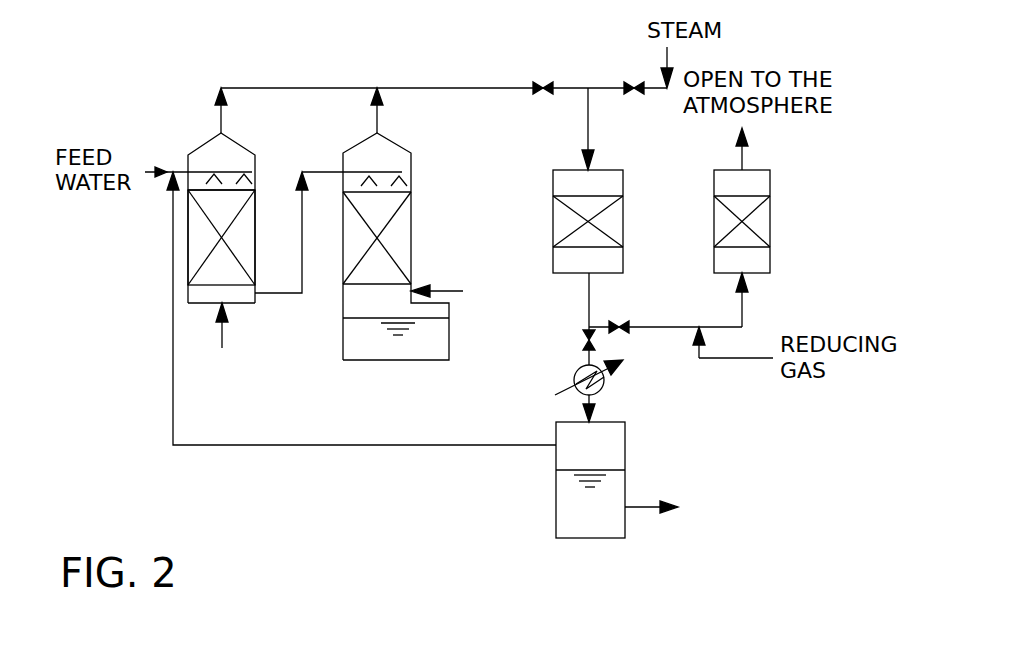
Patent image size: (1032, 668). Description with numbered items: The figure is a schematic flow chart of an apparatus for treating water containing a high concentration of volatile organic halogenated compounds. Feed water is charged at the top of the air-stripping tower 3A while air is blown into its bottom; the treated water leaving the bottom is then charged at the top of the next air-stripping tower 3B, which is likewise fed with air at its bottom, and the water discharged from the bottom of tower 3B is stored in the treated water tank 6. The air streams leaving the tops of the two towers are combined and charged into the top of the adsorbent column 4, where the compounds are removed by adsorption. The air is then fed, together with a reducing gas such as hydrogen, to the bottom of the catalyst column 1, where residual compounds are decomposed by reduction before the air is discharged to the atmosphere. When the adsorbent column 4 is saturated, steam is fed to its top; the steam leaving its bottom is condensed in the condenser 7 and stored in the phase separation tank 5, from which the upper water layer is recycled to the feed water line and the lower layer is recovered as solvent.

The catalyst column 1 is at (765, 225).
The air-stripping tower 3A is at (242, 247).
The air-stripping tower 3B is at (405, 248).
The adsorbent column 4 is at (613, 228).
The phase separation tank 5 is at (600, 452).
The treated water tank 6 is at (381, 350).
The condenser 7 is at (598, 393).